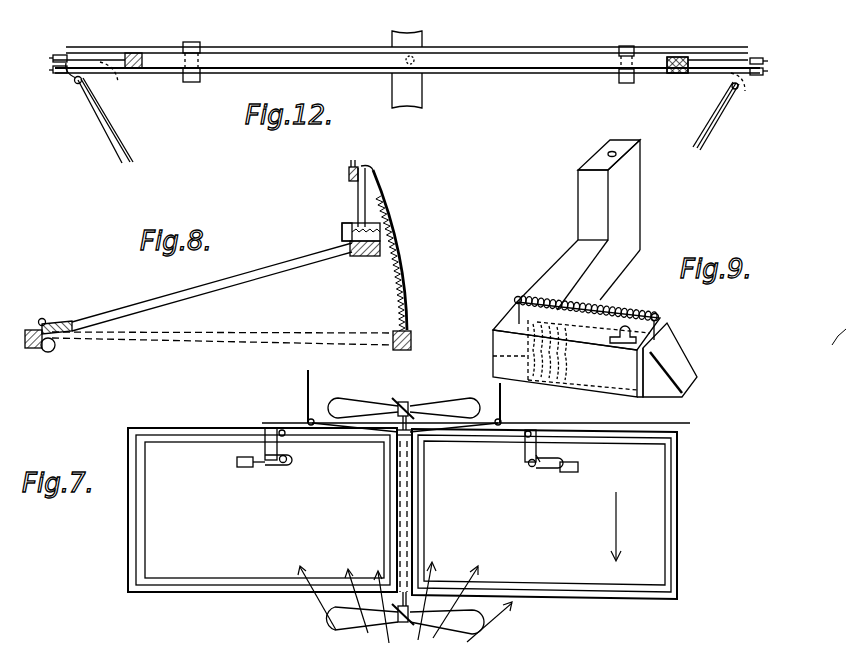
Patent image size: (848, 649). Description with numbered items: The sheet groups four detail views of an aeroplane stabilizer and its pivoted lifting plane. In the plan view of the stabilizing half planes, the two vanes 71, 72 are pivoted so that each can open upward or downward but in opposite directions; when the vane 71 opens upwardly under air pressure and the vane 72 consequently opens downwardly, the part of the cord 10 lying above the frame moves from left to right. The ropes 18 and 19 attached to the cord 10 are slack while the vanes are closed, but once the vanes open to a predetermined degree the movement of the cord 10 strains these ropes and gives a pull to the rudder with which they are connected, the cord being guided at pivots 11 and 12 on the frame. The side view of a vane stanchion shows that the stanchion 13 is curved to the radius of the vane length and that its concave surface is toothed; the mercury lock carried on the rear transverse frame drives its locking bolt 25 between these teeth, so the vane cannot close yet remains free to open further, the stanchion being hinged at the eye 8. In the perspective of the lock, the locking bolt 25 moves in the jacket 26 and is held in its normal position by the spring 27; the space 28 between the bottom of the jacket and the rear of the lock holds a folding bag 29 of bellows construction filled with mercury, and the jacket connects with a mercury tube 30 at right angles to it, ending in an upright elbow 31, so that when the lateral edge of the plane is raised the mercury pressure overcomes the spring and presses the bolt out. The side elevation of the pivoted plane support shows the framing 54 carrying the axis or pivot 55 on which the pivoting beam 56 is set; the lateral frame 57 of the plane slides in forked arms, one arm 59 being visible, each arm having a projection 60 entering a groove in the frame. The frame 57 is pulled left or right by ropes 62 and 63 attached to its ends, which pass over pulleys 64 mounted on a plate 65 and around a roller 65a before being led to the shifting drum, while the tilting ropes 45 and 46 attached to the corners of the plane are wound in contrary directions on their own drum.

In FIG. 8, the hinge eye 8 is at (50, 352).
In FIG. 8, the cord 10 is at (358, 203).
In FIG. 7, the cord 10 is at (266, 435).
In FIG. 7, the pivot 11 is at (292, 462).
In FIG. 7, the stanchion 12 is at (530, 470).
In FIG. 8, the stanchion 13 is at (388, 207).
In FIG. 7, the rope 18 is at (306, 388).
In FIG. 7, the rope 19 is at (503, 412).
In FIG. 8, the locking bolt 25 is at (382, 234).
In FIG. 9, the locking bolt 25 is at (672, 353).
In FIG. 7, the locking bolt 25 is at (268, 428).
In FIG. 9, the jacket 26 is at (610, 351).
In FIG. 7, the jacket 26 is at (540, 459).
In FIG. 9, the spring 27 is at (606, 312).
In FIG. 8, the space 28 is at (348, 246).
In FIG. 9, the space 28 is at (500, 366).
In FIG. 9, the folding bag 29 is at (493, 351).
In FIG. 9, the mercury tube 30 is at (603, 277).
In FIG. 7, the mercury tube 30 is at (266, 466).
In FIG. 9, the elbow 31 is at (632, 193).
In FIG. 7, the elbow 31 is at (236, 461).
In FIG. 12, the rope 45 is at (100, 135).
In FIG. 12, the rope 46 is at (710, 132).
In FIG. 12, the framing 54 is at (412, 98).
In FIG. 12, the axis or pivot 55 is at (414, 60).
In FIG. 12, the pivoting beam 56 is at (272, 52).
In FIG. 12, the lateral frame 57 is at (320, 62).
In FIG. 12, the arm 59 is at (630, 50).
In FIG. 12, the projection 60 is at (204, 57).
In FIG. 12, the rope 62 is at (98, 58).
In FIG. 12, the rope 63 is at (708, 62).
In FIG. 12, the pulley 64 is at (52, 56).
In FIG. 12, the plate 65 is at (65, 74).
In FIG. 12, the roller 65a is at (120, 84).
In FIG. 7, the vane 71 is at (262, 510).
In FIG. 7, the vane 72 is at (544, 514).